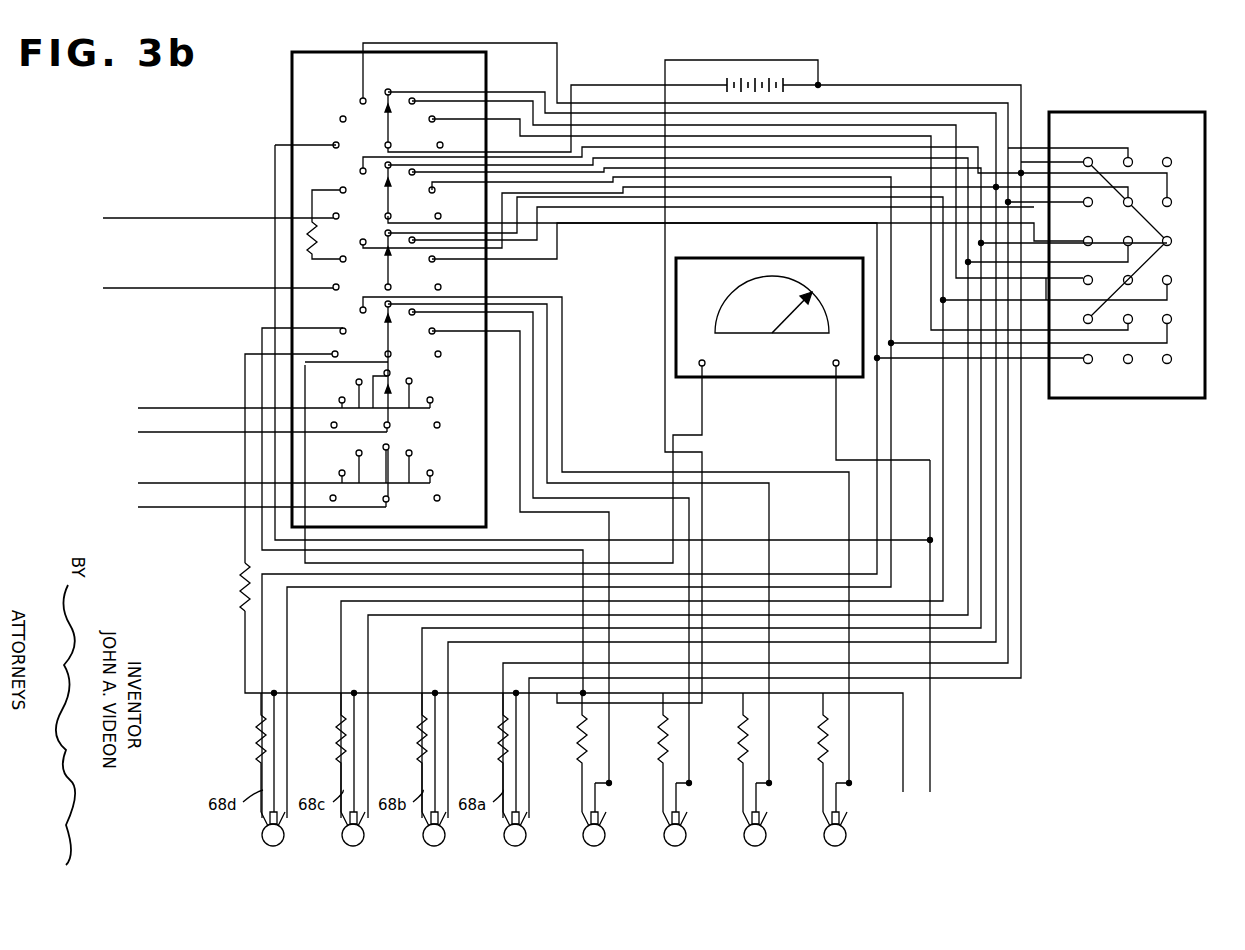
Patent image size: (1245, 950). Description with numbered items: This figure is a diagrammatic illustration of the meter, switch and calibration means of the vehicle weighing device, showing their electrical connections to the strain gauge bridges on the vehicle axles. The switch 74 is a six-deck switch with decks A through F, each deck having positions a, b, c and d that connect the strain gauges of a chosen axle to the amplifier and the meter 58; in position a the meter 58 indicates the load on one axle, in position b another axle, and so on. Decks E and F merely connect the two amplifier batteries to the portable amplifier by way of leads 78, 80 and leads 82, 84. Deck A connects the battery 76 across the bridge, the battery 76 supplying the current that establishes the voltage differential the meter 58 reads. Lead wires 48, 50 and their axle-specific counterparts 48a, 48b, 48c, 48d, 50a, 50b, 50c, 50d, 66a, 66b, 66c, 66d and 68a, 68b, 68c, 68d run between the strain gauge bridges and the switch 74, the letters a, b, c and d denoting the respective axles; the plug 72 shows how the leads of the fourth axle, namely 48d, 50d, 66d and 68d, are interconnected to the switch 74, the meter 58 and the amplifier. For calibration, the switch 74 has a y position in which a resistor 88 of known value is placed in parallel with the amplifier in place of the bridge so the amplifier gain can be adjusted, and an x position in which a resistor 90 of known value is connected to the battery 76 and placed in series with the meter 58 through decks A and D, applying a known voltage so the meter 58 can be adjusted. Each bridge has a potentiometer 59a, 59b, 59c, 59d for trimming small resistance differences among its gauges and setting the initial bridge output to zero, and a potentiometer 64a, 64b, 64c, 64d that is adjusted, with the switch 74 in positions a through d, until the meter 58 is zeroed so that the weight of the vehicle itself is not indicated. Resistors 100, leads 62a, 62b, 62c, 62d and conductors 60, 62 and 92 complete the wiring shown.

The switch 74 is at (291, 66).
The battery 76 is at (756, 63).
The meter 58 is at (722, 379).
The plug 72 is at (1206, 384).
The common return wire 92 is at (243, 660).
The resistor 90 is at (243, 580).
The resistor 88 is at (308, 233).
The lead wire 48 is at (158, 218).
The lead wire 50 is at (170, 289).
The lead 84 is at (185, 407).
The lead 82 is at (178, 434).
The lead 78 is at (178, 482).
The lead 80 is at (180, 509).
The supply line 60 is at (930, 752).
The supply line 62 is at (903, 752).
The lamp resistors 100 is at (821, 738).
The lead wire 48a is at (1168, 155).
The lead wire 48b is at (1092, 238).
The lead wire 48c is at (1132, 283).
The lead wire 48d is at (1172, 325).
The lead wire 50a is at (1090, 196).
The lead wire 50b is at (1132, 243).
The lead wire 50c is at (1172, 280).
The lead wire 50d is at (262, 628).
The lead wire 66a is at (1128, 155).
The lead wire 66b is at (1172, 198).
The lead wire 66c is at (1092, 278).
The lead wire 66d is at (1132, 320).
The lead wire 68a is at (1088, 157).
The lead wire 68b is at (1132, 196).
The lead wire 68c is at (1172, 243).
The lead wire 68d is at (1092, 318).
The lamp supply line 62a is at (832, 778).
The lamp supply line 62b is at (752, 778).
The lamp supply line 62c is at (672, 778).
The lamp supply line 62d is at (592, 778).
The potentiometer 59a is at (525, 843).
The potentiometer 59b is at (444, 843).
The potentiometer 59c is at (363, 843).
The potentiometer 59d is at (283, 843).
The potentiometer 64a is at (844, 843).
The potentiometer 64b is at (764, 843).
The potentiometer 64c is at (684, 843).
The potentiometer 64d is at (603, 843).